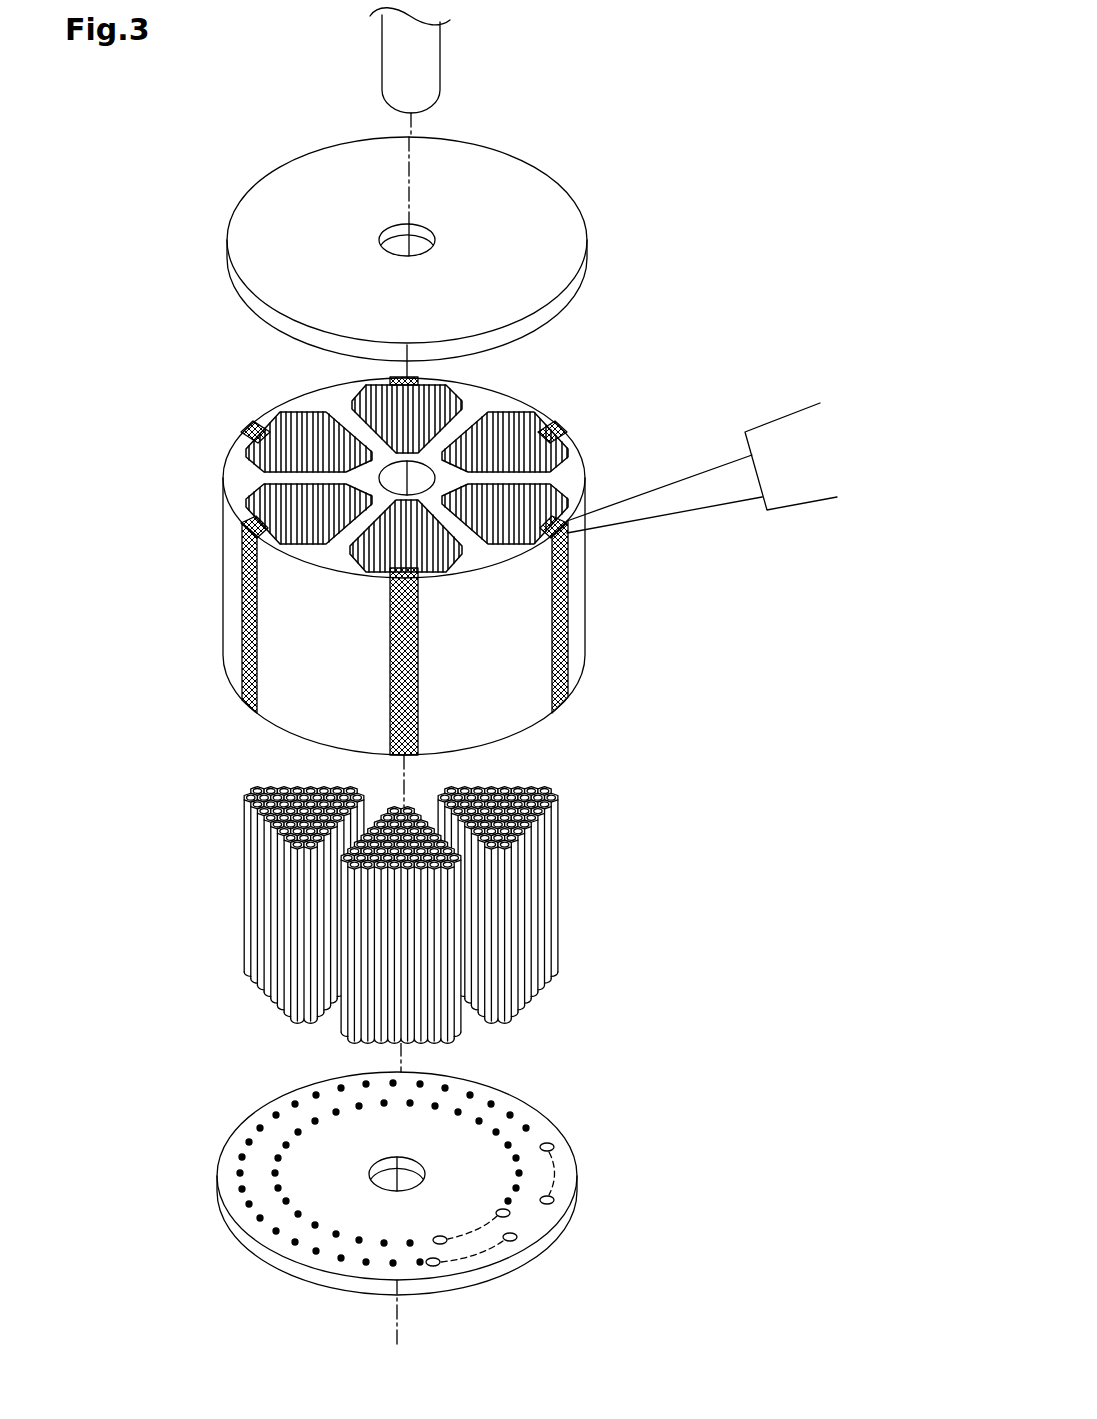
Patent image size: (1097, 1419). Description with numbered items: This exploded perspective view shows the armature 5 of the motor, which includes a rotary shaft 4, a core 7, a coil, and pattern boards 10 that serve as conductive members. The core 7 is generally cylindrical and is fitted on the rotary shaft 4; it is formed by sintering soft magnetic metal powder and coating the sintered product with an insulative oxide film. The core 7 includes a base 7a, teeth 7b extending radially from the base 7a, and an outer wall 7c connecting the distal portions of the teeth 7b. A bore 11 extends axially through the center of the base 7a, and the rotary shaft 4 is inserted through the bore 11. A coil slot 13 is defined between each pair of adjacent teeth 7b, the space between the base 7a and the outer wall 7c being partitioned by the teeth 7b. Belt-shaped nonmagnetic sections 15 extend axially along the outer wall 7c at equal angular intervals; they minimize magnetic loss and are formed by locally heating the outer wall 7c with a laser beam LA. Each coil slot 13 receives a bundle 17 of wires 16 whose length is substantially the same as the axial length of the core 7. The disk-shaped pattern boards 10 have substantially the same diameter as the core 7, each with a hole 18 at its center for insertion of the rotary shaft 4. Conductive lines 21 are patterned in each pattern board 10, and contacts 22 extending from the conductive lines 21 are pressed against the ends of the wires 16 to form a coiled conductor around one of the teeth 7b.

The rotary shaft 4 is at (441, 99).
The armature 5 is at (605, 115).
The core 7 is at (249, 387).
The base 7a is at (383, 468).
The teeth 7b is at (283, 478).
The outer wall 7c is at (568, 444).
The pattern board 10 is at (587, 253).
The bore 11 is at (391, 462).
The coil slot 13 is at (252, 486).
The nonmagnetic section 15 is at (242, 602).
The wire 16 is at (557, 928).
The bundle 17 is at (402, 929).
The hole 18 is at (392, 242).
The conductive line 21 is at (553, 1167).
The contact 22 is at (552, 1147).
The laser LA is at (767, 512).